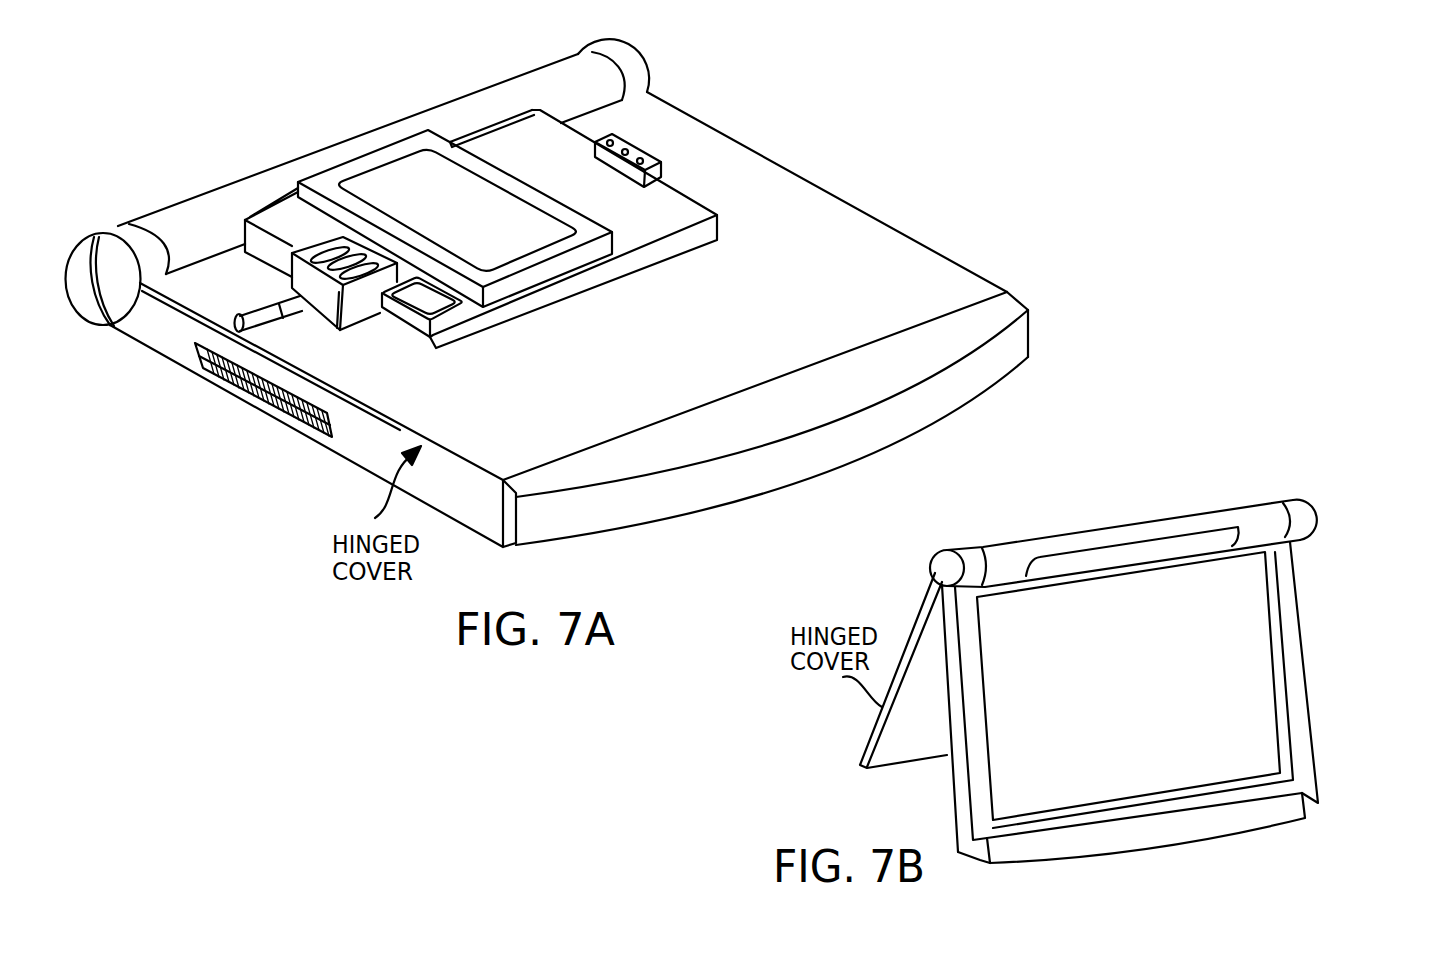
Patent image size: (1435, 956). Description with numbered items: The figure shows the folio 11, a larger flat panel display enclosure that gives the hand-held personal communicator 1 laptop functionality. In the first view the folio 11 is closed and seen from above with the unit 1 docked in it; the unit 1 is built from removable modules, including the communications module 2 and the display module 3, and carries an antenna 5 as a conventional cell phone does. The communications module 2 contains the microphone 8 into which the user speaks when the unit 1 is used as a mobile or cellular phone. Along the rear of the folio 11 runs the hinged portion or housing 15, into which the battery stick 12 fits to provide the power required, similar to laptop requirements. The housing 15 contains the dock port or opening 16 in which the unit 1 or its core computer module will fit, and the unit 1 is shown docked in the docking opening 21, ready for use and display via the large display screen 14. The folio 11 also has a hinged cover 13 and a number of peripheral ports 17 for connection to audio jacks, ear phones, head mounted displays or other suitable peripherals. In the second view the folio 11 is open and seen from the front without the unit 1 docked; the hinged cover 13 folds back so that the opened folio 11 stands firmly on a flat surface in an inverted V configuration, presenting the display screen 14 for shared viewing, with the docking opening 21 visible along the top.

In FIG. 7A, the hand-held personal communicator 1 is at (533, 242).
In FIG. 7A, the communications module 2 is at (360, 310).
In FIG. 7A, the display module 3 is at (492, 197).
In FIG. 7A, the antenna 5 is at (263, 315).
In FIG. 7A, the microphone 8 is at (657, 163).
In FIG. 7A, the folio 11 is at (960, 202).
In FIG. 7A, the battery stick 12 is at (88, 243).
In FIG. 7A, the hinged cover 13 is at (943, 270).
In FIG. 7B, the display screen 14 is at (1243, 628).
In FIG. 7A, the hinged housing 15 is at (362, 136).
In FIG. 7A, the dock port 16 is at (203, 232).
In FIG. 7A, the peripheral ports 17 is at (290, 420).
In FIG. 7A, the docking opening 21 is at (478, 130).
In FIG. 7B, the docking opening 21 is at (1115, 553).